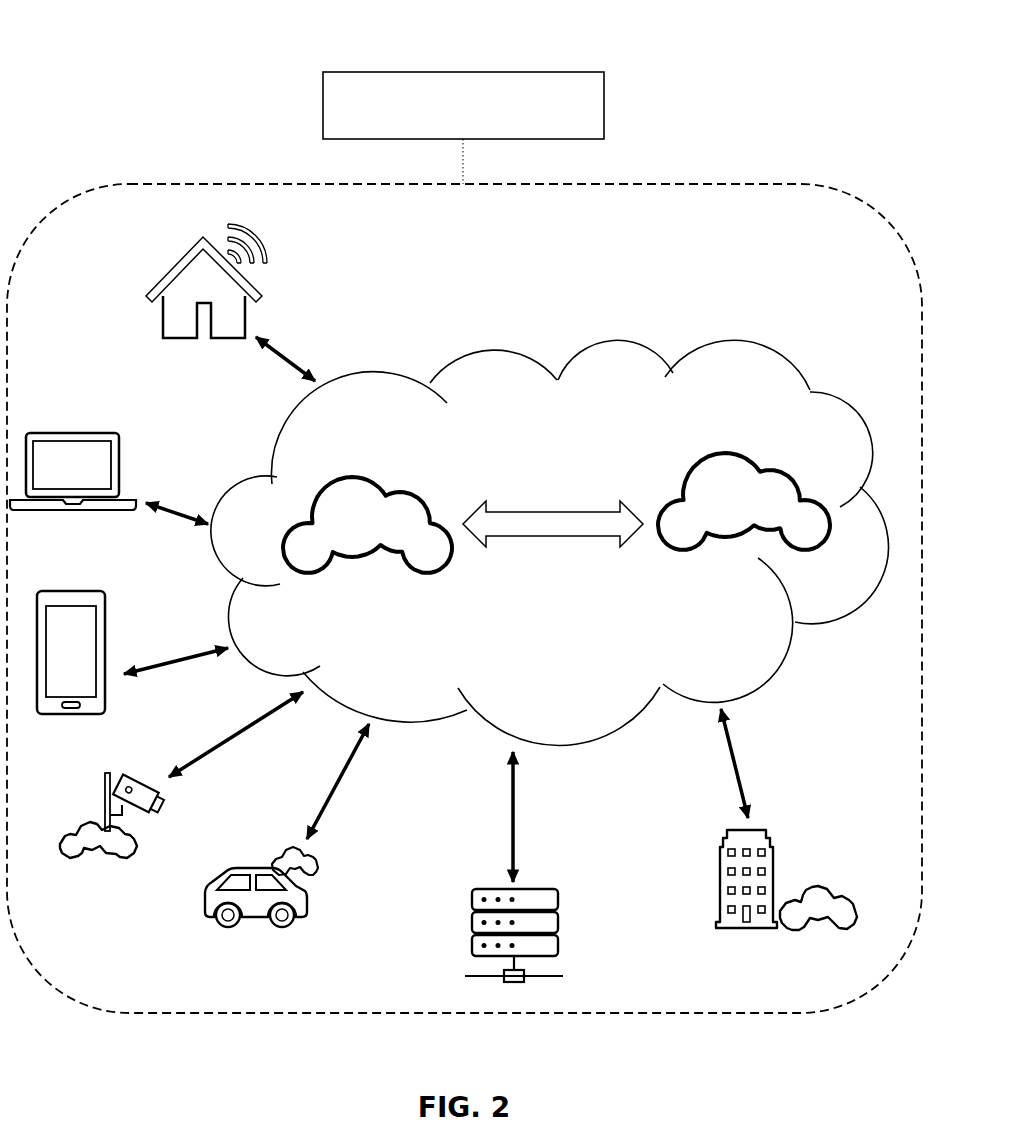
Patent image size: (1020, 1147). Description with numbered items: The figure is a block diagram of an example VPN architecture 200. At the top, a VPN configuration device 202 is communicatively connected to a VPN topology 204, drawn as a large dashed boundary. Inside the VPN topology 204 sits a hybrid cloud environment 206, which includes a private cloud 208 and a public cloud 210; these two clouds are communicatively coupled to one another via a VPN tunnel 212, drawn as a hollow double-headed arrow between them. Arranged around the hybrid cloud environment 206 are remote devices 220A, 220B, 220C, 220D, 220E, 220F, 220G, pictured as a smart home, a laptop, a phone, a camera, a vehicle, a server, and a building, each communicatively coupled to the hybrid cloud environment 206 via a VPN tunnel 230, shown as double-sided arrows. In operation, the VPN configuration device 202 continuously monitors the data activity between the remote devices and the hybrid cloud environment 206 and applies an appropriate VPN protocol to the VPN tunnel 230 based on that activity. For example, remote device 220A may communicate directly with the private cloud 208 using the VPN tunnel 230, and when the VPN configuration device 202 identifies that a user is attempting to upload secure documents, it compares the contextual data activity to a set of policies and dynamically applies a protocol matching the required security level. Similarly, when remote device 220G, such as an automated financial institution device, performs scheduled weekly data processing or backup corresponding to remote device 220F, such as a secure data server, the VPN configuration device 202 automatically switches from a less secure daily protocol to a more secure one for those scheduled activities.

The VPN architecture 200 is at (196, 55).
The VPN configuration device 202 is at (463, 128).
The VPN topology 204 is at (745, 184).
The hybrid cloud environment 206 is at (550, 542).
The private cloud 208 is at (367, 525).
The public cloud 210 is at (744, 501).
The VPN tunnel 212 is at (555, 538).
The remote device 220A is at (162, 314).
The remote device 220B is at (68, 511).
The remote device 220C is at (69, 716).
The remote device 220D is at (100, 860).
The remote device 220E is at (308, 896).
The remote device 220F is at (560, 896).
The remote device 220G is at (775, 848).
The VPN tunnel 230 is at (278, 358).